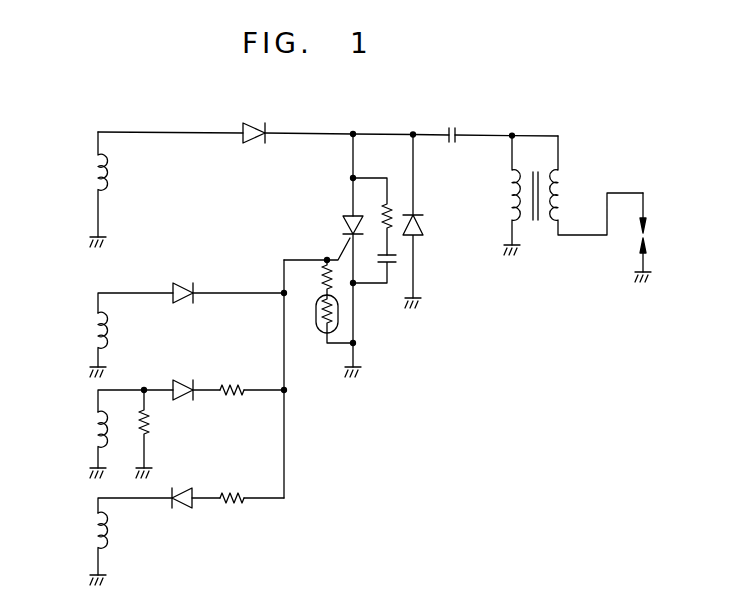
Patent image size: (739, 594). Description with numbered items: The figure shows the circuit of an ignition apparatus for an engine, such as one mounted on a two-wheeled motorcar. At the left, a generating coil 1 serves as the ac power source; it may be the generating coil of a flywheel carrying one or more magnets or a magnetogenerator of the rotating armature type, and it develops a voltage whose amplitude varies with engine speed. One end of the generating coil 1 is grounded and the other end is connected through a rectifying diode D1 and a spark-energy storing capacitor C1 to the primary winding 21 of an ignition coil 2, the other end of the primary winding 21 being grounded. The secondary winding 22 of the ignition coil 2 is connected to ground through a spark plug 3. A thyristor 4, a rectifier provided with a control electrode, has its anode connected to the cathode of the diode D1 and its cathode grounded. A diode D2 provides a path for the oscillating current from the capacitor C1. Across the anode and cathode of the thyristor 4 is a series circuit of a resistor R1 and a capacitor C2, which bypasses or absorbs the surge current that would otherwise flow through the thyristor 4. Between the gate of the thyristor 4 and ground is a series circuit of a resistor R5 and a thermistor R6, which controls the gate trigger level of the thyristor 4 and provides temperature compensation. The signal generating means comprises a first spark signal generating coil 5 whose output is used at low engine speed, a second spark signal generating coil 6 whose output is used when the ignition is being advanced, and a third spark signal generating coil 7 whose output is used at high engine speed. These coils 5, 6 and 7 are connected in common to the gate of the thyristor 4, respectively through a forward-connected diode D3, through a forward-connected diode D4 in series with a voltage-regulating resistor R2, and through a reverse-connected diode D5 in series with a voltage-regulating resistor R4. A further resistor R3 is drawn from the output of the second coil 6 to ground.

The generating coil 1 is at (90, 174).
The ignition coil 2 is at (555, 177).
The primary winding 21 is at (502, 181).
The secondary winding 22 is at (566, 178).
The spark plug 3 is at (648, 236).
The thyristor 4 is at (336, 228).
The first spark signal generating coil 5 is at (86, 326).
The second spark signal generating coil 6 is at (84, 422).
The third spark signal generating coil 7 is at (80, 528).
The rectifying diode D1 is at (255, 122).
The diode D2 is at (424, 227).
The forward-connected diode D3 is at (186, 302).
The forward-connected diode D4 is at (187, 380).
The reverse-connected diode D5 is at (185, 488).
The resistor R1 is at (389, 200).
The voltage-regulating resistor R2 is at (232, 382).
The resistor R3 is at (150, 422).
The voltage-regulating resistor R4 is at (232, 493).
The resistor R5 is at (324, 277).
The thermistor R6 is at (314, 318).
The capacitor C1 is at (451, 124).
The capacitor C2 is at (400, 257).